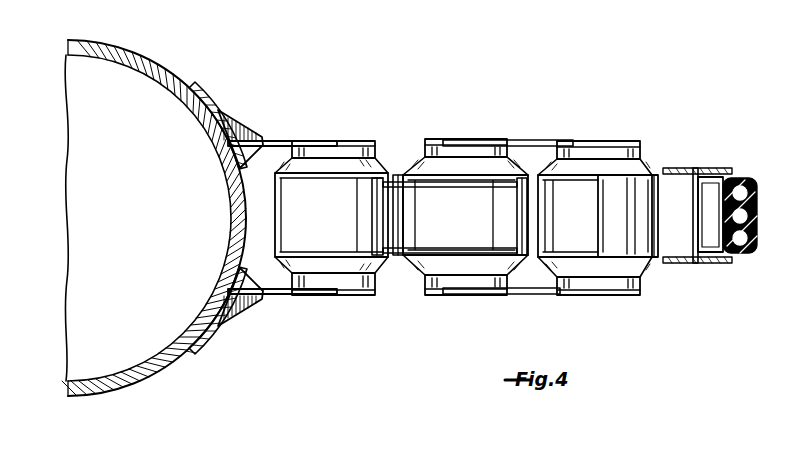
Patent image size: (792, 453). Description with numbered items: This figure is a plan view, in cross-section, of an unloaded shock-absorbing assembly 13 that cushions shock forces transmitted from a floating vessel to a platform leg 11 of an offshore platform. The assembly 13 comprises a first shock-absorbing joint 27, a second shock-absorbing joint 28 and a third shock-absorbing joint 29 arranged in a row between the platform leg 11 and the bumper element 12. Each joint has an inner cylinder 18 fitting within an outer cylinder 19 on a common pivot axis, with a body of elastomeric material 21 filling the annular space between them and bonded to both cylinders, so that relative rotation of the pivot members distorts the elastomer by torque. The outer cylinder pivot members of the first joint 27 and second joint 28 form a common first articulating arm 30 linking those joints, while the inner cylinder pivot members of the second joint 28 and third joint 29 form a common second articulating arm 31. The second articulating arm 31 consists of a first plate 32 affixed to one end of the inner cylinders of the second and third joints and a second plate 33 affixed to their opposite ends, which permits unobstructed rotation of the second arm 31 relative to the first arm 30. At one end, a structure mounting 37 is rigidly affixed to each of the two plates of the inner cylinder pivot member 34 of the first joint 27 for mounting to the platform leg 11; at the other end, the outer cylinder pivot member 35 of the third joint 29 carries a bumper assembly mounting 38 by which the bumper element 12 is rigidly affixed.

The platform leg 11 is at (163, 72).
The bumper element 12 is at (757, 205).
The shock-absorbing assembly 13 is at (452, 306).
The inner cylinder 18 is at (360, 140).
The outer cylinder 19 is at (340, 257).
The body of elastomeric material 21 is at (387, 160).
The first shock-absorbing joint 27 is at (333, 138).
The second shock-absorbing joint 28 is at (488, 136).
The third shock-absorbing joint 29 is at (600, 138).
The first articulating arm 30 is at (394, 256).
The second articulating arm 31 is at (524, 138).
The first plate 32 is at (546, 140).
The second plate 33 is at (530, 295).
The inner cylinder pivot member 34 is at (270, 140).
The outer cylinder pivot member 35 is at (656, 258).
The structure mounting 37 is at (240, 117).
The bumper assembly mounting 38 is at (688, 168).